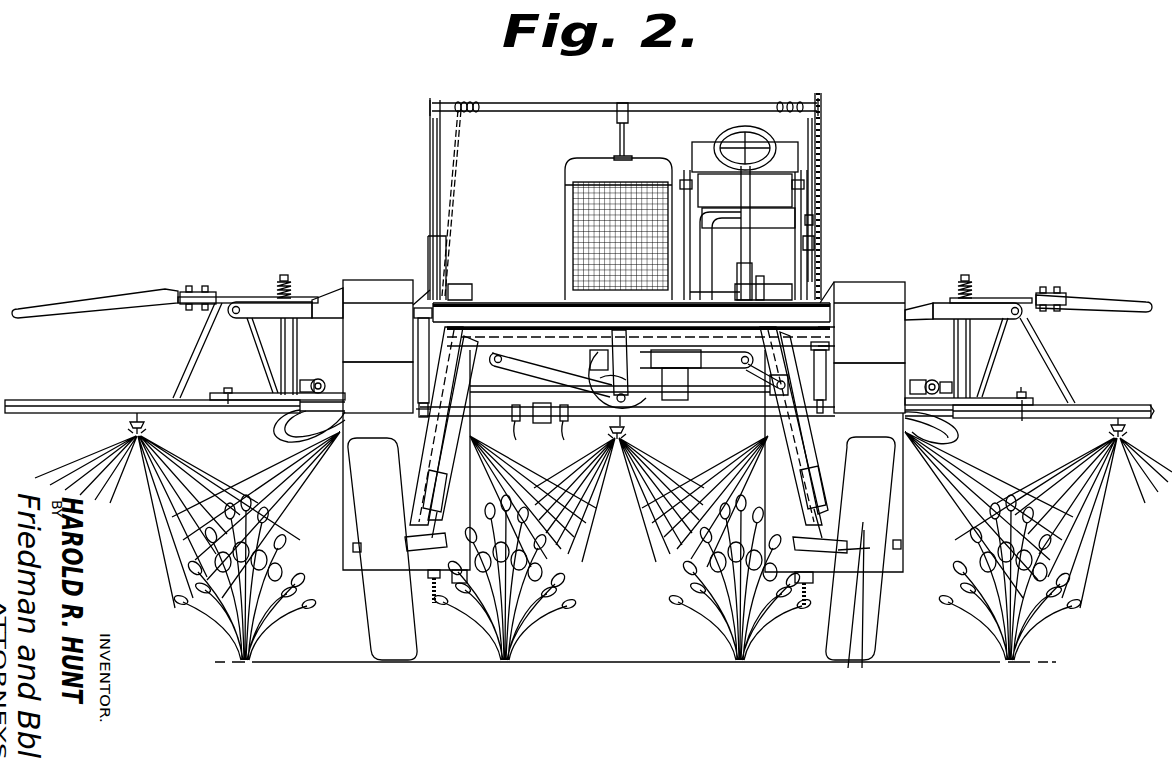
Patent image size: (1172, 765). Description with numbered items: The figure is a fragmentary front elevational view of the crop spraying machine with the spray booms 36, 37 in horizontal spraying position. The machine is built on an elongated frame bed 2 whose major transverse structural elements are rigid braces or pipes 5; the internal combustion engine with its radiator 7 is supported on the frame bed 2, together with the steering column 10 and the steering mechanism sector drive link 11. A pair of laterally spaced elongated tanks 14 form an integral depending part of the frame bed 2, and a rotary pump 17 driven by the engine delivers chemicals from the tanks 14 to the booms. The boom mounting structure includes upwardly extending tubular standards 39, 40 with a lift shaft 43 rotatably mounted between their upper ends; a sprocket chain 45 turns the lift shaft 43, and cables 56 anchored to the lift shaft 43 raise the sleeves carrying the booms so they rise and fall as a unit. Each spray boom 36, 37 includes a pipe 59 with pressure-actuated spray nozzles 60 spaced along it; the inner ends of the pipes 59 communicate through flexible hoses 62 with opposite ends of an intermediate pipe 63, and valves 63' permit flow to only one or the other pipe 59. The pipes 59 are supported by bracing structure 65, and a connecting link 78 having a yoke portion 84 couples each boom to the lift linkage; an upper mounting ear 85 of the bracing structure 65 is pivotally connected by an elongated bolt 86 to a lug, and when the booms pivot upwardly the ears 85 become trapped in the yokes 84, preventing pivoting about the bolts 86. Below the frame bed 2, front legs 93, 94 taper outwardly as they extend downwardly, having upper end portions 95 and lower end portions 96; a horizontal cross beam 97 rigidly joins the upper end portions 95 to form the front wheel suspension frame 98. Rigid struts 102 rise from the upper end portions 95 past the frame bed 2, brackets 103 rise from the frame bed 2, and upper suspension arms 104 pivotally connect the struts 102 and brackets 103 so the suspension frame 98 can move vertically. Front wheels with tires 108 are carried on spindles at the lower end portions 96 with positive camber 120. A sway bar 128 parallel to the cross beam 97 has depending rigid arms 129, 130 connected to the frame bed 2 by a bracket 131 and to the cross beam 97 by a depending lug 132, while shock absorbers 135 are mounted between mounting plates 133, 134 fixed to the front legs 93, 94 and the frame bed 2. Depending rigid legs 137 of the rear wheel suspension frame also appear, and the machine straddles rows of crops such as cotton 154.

The frame bed 2 is at (869, 284).
The rigid braces or pipes 5 is at (503, 305).
The radiator 7 is at (640, 170).
The steering column 10 is at (750, 192).
The steering mechanism sector drive link 11 is at (758, 276).
The elongated tanks 14 is at (904, 514).
The rotary pump 17 is at (606, 400).
The spray boom 36 is at (120, 295).
The spray boom 37 is at (1112, 296).
The standard 39 is at (816, 133).
The standard 40 is at (428, 151).
The lift shaft 43 is at (572, 104).
The sprocket chain 45 is at (822, 160).
The cables 56 is at (452, 162).
The pipes 59 is at (52, 413).
The spray nozzles 60 is at (137, 436).
The flexible hoses 62 is at (278, 440).
The intermediate pipe 63 is at (627, 427).
The valves 63' is at (622, 515).
The bracing structure 65 is at (190, 370).
The connecting link 78 is at (335, 284).
The yoke portion 84 is at (258, 305).
The upper mounting ear 85 is at (215, 300).
The elongated bolt 86 is at (285, 351).
The front leg 93 is at (433, 442).
The front leg 94 is at (812, 437).
The upper end portions 95 is at (828, 347).
The lower end portions 96 is at (413, 500).
The cross beam 97 is at (548, 337).
The front wheel suspension frame 98 is at (452, 450).
The rigid struts 102 is at (801, 240).
The brackets 103 is at (815, 240).
The upper suspension arms 104 is at (814, 220).
The tires 108 is at (387, 627).
The positive camber 120 is at (857, 622).
The sway bar 128 is at (596, 352).
The depending rigid arm 129 is at (826, 318).
The depending rigid arm 130 is at (563, 424).
The bracket 131 is at (826, 382).
The rigid depending bracket or lug 132 is at (645, 403).
The shock absorber mounting plate 133 is at (418, 412).
The shock absorber mounting plate 134 is at (416, 280).
The shock absorbers 135 is at (417, 373).
The rigid legs 137 is at (468, 582).
The cotton 154 is at (512, 625).